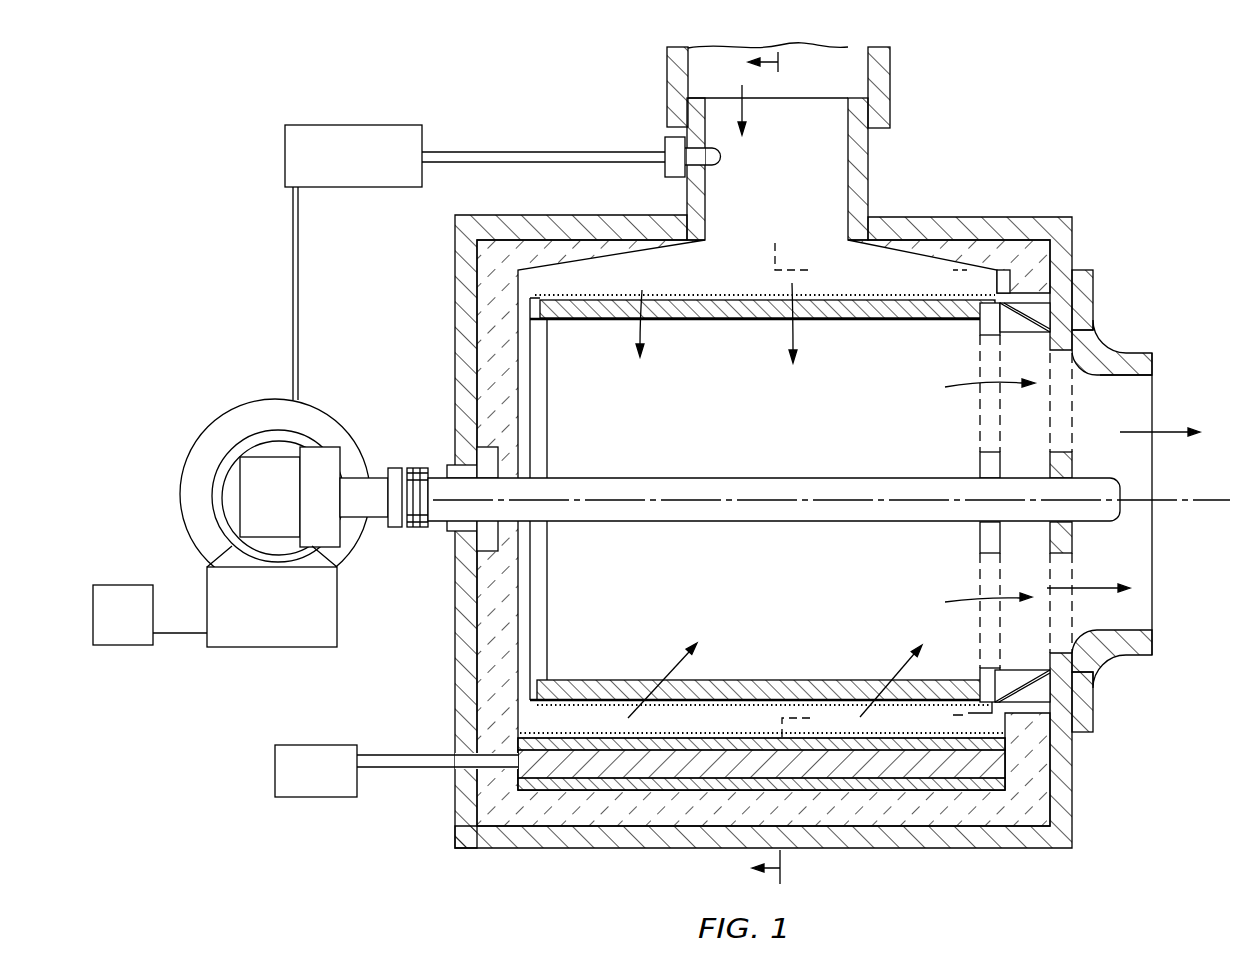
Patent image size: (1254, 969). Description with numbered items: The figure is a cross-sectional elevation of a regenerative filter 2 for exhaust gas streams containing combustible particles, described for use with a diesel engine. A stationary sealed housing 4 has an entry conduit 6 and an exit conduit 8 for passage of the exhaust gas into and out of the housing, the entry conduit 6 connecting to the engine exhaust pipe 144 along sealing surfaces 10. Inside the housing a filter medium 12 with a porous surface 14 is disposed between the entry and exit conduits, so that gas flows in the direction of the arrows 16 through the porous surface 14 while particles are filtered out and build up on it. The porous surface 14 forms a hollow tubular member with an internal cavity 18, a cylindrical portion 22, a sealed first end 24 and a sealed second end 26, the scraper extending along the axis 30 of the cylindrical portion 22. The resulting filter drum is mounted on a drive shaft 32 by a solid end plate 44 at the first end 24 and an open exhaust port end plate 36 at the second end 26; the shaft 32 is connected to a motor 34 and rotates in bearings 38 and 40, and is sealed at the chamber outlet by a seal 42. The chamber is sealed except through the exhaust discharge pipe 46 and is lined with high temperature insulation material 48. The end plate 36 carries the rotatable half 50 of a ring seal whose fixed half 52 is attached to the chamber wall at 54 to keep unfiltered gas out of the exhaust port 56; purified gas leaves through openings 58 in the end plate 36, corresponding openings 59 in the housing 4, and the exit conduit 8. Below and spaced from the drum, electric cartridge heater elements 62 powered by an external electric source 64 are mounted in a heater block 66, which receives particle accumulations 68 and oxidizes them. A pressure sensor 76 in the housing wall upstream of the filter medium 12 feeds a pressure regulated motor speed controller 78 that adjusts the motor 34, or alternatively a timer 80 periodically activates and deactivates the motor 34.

The regenerative filter 2 is at (978, 185).
The sealed housing 4 is at (457, 262).
The entry conduit 6 is at (815, 118).
The exit conduit 8 is at (1130, 622).
The sealing surfaces 10 is at (868, 162).
The filter medium 12 is at (738, 322).
The porous surface 14 is at (730, 300).
The arrows 16 is at (742, 90).
The internal cavity 18 is at (675, 335).
The cylindrical portion 22 is at (902, 325).
The sealed first end 24 is at (534, 284).
The sealed second end 26 is at (985, 288).
The axis 30 is at (1205, 500).
The drive shaft 32 is at (422, 466).
The motor 34 is at (242, 456).
The exhaust port end plate 36 is at (980, 553).
The bearing 38 is at (452, 530).
The bearing 40 is at (1072, 468).
The seal 42 is at (465, 548).
The solid end plate 44 is at (550, 378).
The exhaust discharge pipe 46 is at (1148, 330).
The high temperature insulation material 48 is at (593, 818).
The rotatable half of ring seal 50 is at (1010, 335).
The fixed half of ring seal 52 is at (1078, 318).
The chamber wall attachment 54 is at (1080, 690).
The exhaust port 56 is at (1130, 377).
The openings 58 is at (975, 438).
The openings 59 is at (1050, 438).
The electric cartridge heater elements 62 is at (632, 775).
The external electric source 64 is at (312, 797).
The heater block 66 is at (678, 790).
The particle accumulations 68 is at (765, 735).
The pressure sensor 76 is at (665, 148).
The pressure regulated motor speed controller 78 is at (422, 133).
The timer 80 is at (152, 585).
The exhaust pipe 144 is at (891, 108).